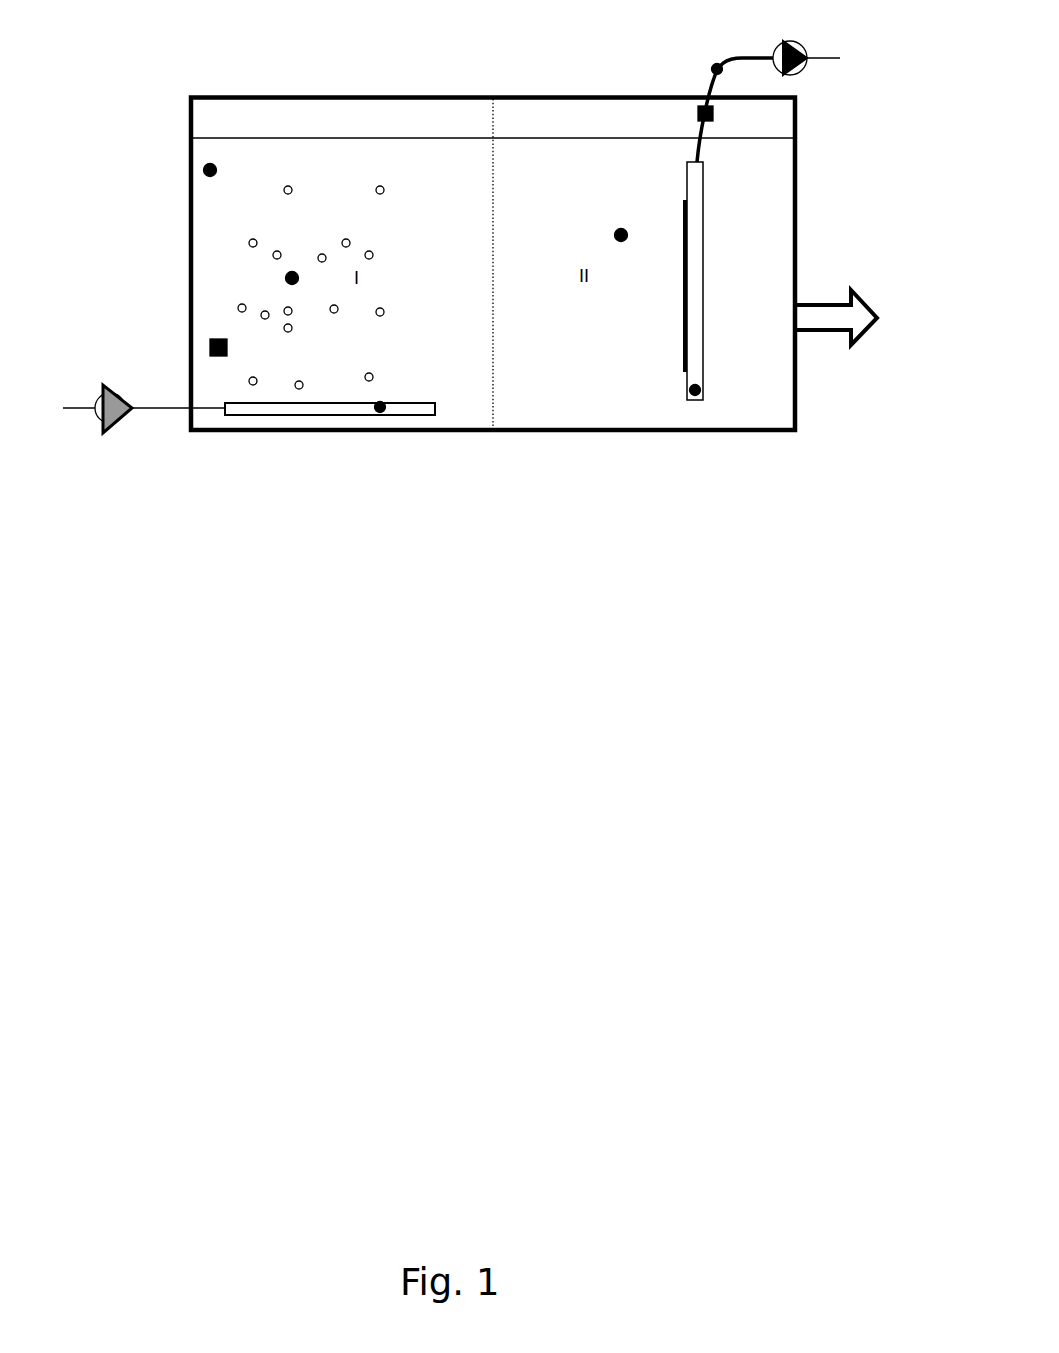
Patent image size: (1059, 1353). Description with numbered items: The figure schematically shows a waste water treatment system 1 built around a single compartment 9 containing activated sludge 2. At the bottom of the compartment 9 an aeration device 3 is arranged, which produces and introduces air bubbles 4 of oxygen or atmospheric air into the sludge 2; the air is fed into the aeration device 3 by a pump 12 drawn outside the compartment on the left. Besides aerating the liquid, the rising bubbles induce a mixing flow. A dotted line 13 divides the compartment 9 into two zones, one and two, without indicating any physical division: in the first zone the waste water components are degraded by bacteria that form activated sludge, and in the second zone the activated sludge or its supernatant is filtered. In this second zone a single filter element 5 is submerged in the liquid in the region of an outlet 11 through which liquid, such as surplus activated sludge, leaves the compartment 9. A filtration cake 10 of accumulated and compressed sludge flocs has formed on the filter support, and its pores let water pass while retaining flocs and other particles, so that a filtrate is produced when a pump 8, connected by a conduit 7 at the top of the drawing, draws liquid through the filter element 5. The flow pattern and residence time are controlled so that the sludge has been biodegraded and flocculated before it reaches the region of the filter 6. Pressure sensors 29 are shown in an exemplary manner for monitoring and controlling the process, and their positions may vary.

The waste water treatment system 1 is at (162, 83).
The activated sludge 2 is at (205, 169).
The aeration device 3 is at (378, 409).
The air bubbles 4 is at (287, 279).
The filter element 5 is at (697, 394).
The filter 6 is at (619, 230).
The conduit 7 is at (712, 67).
The pump 8 is at (775, 48).
The compartment 9 is at (187, 236).
The filtration cake 10 is at (682, 290).
The outlet 11 is at (855, 345).
The pump 12 is at (102, 432).
The dotted line 13 is at (491, 96).
The pressure sensors 29 is at (208, 347).